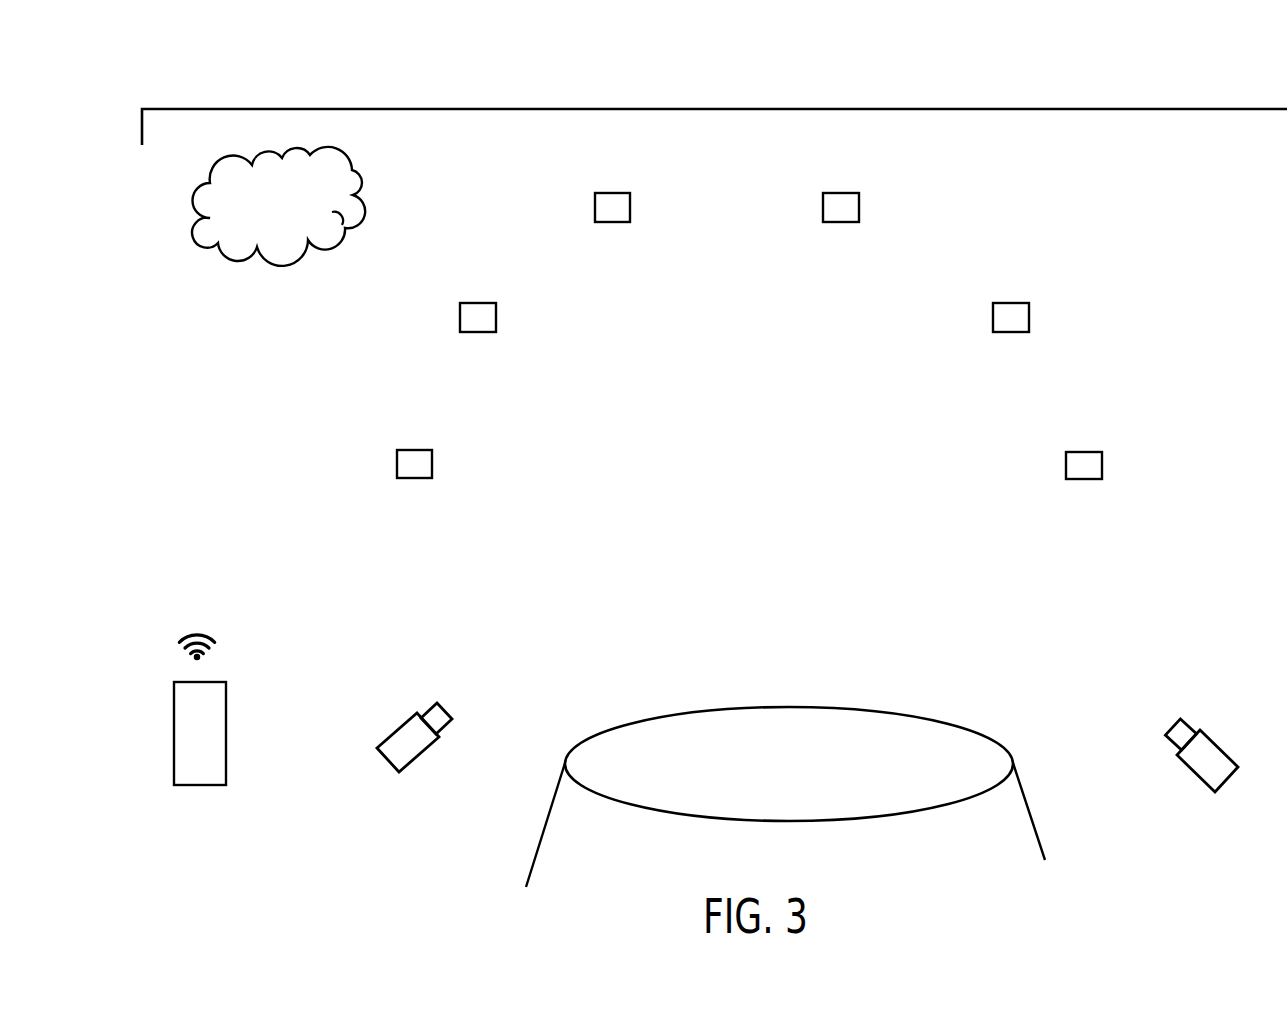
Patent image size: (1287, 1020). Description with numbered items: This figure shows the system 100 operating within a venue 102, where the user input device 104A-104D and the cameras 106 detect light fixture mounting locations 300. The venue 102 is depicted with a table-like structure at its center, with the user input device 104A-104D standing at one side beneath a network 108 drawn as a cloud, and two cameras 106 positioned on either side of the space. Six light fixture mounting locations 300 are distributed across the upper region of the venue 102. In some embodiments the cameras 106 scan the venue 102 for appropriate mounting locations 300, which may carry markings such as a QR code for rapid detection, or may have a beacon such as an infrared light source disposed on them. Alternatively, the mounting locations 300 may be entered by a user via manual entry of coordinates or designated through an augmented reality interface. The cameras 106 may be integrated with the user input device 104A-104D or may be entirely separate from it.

The system 100 is at (1120, 94).
The venue 102 is at (852, 677).
The user input device 104A-104D is at (226, 727).
The cameras 106 is at (397, 730).
The network 108 is at (233, 257).
The light fixture mounting locations 300 is at (630, 206).